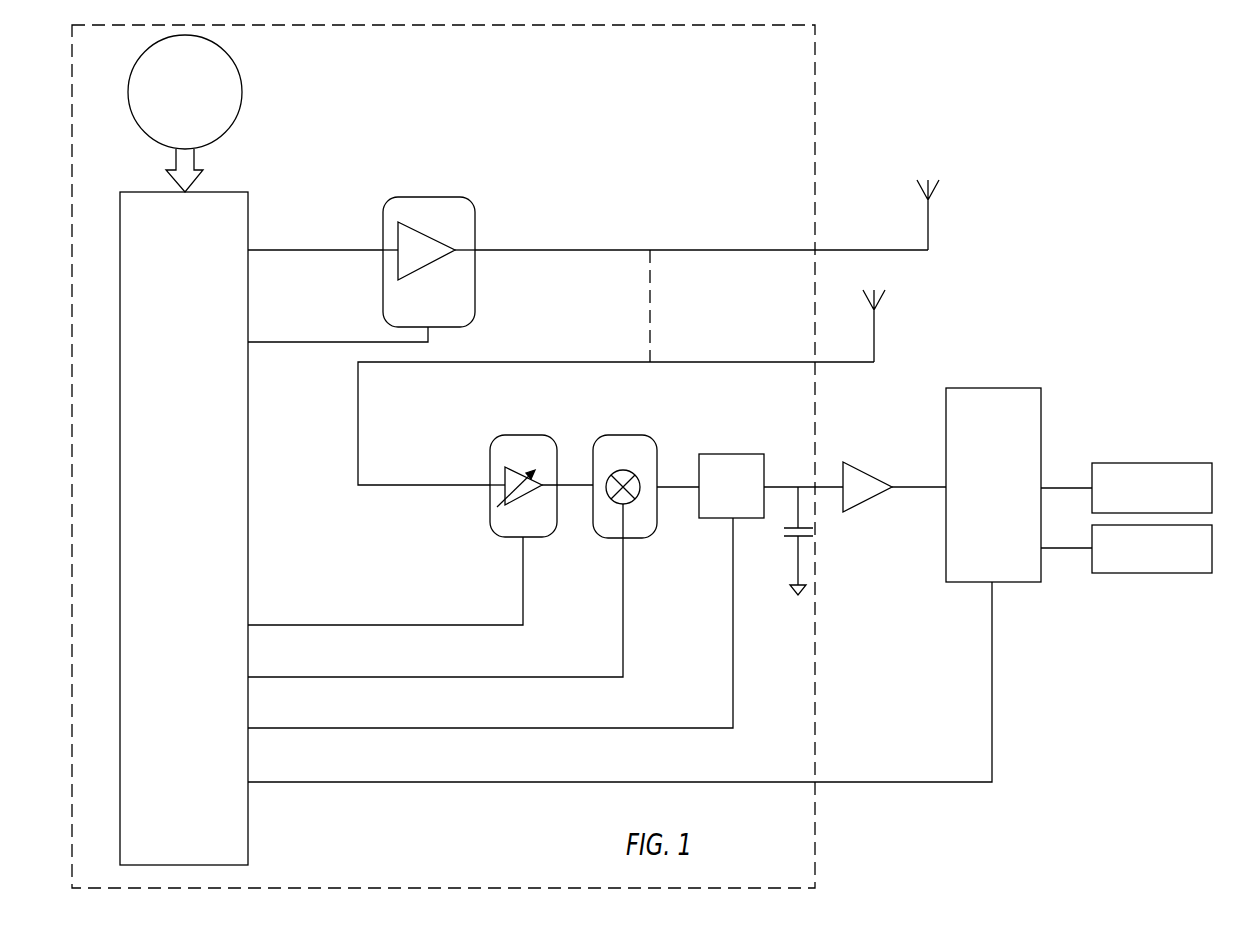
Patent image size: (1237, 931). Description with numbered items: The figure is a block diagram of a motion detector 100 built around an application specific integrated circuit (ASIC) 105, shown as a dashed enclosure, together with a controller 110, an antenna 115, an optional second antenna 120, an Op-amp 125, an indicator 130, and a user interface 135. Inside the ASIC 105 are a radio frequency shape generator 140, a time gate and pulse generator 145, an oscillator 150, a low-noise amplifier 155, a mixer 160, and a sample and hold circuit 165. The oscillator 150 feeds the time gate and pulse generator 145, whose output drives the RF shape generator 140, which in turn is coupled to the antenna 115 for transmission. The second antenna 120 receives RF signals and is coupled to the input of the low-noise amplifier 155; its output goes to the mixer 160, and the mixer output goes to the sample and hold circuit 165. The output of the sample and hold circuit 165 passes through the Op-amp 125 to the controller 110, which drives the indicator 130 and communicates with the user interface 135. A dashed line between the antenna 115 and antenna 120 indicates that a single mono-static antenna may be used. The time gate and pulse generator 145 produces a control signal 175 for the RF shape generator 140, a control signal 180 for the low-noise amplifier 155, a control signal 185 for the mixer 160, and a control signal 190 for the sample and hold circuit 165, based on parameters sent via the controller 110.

The motion detector 100 is at (1095, 220).
The application specific integrated circuit (ASIC) 105 is at (805, 152).
The controller 110 is at (975, 582).
The antenna 115 is at (938, 195).
The second antenna 120 is at (880, 305).
The Op-amp 125 is at (866, 470).
The indicator 130 is at (1155, 463).
The user interface 135 is at (1118, 573).
The radio frequency (RF) shape generator 140 is at (475, 287).
The time gate and pulse generator 145 is at (207, 192).
The oscillator 150 is at (157, 142).
The low-noise amplifier 155 is at (540, 435).
The mixer 160 is at (648, 435).
The sample and hold circuit 165 is at (725, 454).
The control signal 175 is at (346, 240).
The control signal 180 is at (358, 615).
The control signal 185 is at (538, 660).
The control signal 190 is at (658, 712).